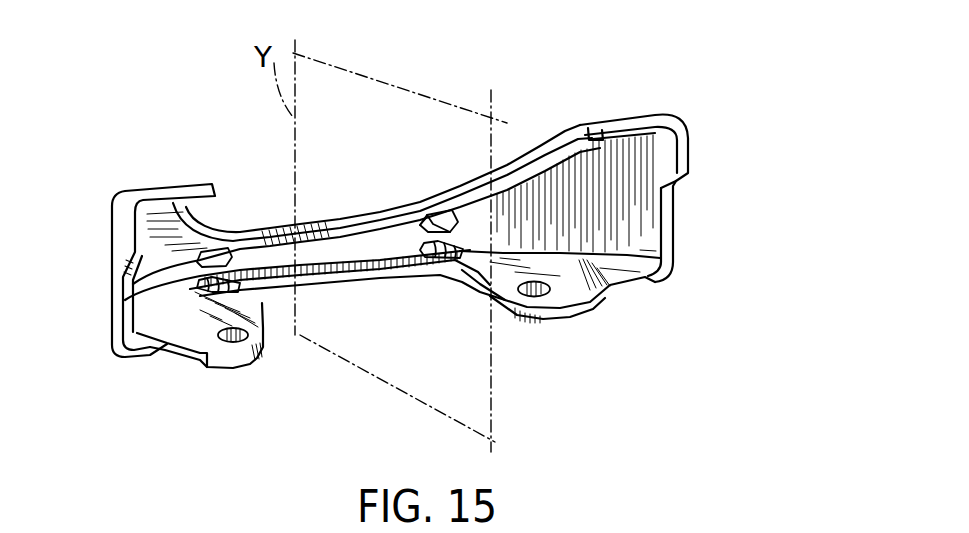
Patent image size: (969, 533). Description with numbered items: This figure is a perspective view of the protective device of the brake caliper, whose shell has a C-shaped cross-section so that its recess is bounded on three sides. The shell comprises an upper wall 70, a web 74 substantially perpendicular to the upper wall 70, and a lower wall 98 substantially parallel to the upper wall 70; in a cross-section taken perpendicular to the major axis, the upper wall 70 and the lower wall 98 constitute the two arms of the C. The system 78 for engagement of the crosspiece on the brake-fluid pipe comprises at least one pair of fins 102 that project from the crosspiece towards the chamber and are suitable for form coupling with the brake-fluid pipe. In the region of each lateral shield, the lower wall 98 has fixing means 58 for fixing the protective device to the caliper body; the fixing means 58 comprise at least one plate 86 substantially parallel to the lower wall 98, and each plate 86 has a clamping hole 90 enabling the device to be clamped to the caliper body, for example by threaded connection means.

The upper wall 70 is at (117, 222).
The web 74 is at (357, 250).
The system for the engagement of the crosspiece on the brake-fluid pipe 78 is at (200, 266).
The fins 102 is at (197, 280).
The lower wall 98 is at (478, 282).
The fixing means 58 is at (420, 350).
The plate 86 is at (420, 350).
The clamping hole 90 is at (240, 342).